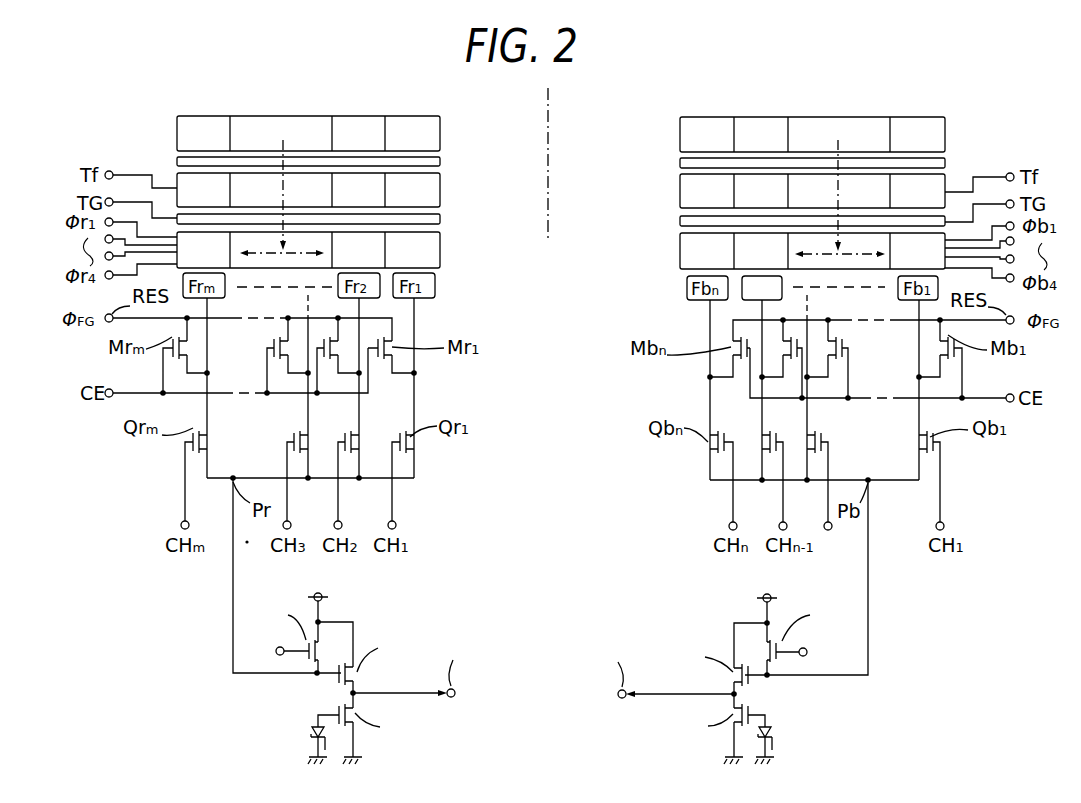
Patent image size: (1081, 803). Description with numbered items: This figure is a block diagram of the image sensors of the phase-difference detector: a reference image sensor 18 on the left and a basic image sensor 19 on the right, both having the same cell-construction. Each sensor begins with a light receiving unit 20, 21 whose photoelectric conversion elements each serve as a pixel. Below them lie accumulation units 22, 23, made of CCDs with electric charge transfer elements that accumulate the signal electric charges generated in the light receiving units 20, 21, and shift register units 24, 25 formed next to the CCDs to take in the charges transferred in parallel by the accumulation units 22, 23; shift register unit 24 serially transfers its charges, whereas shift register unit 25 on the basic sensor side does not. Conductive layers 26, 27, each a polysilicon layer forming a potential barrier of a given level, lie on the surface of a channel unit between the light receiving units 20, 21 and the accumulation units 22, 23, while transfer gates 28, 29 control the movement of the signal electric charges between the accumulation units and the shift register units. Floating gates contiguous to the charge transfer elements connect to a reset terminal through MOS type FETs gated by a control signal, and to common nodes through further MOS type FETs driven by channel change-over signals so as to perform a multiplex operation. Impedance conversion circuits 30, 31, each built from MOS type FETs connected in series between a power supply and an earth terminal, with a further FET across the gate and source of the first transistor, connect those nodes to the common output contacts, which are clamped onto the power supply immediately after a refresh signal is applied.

The reference image sensor 18 is at (252, 110).
The basic image sensor 19 is at (885, 110).
The light receiving unit 20 is at (443, 140).
The light receiving unit 21 is at (680, 133).
The accumulation unit 22 is at (443, 195).
The accumulation unit 23 is at (680, 196).
The shift register unit 24 is at (443, 254).
The shift register unit 25 is at (680, 256).
The conductive layer 26 is at (443, 163).
The conductive layer 27 is at (680, 163).
The transfer gate 28 is at (443, 223).
The transfer gate 29 is at (680, 223).
The impedance conversion circuit 30 is at (276, 708).
The impedance conversion circuit 31 is at (804, 710).